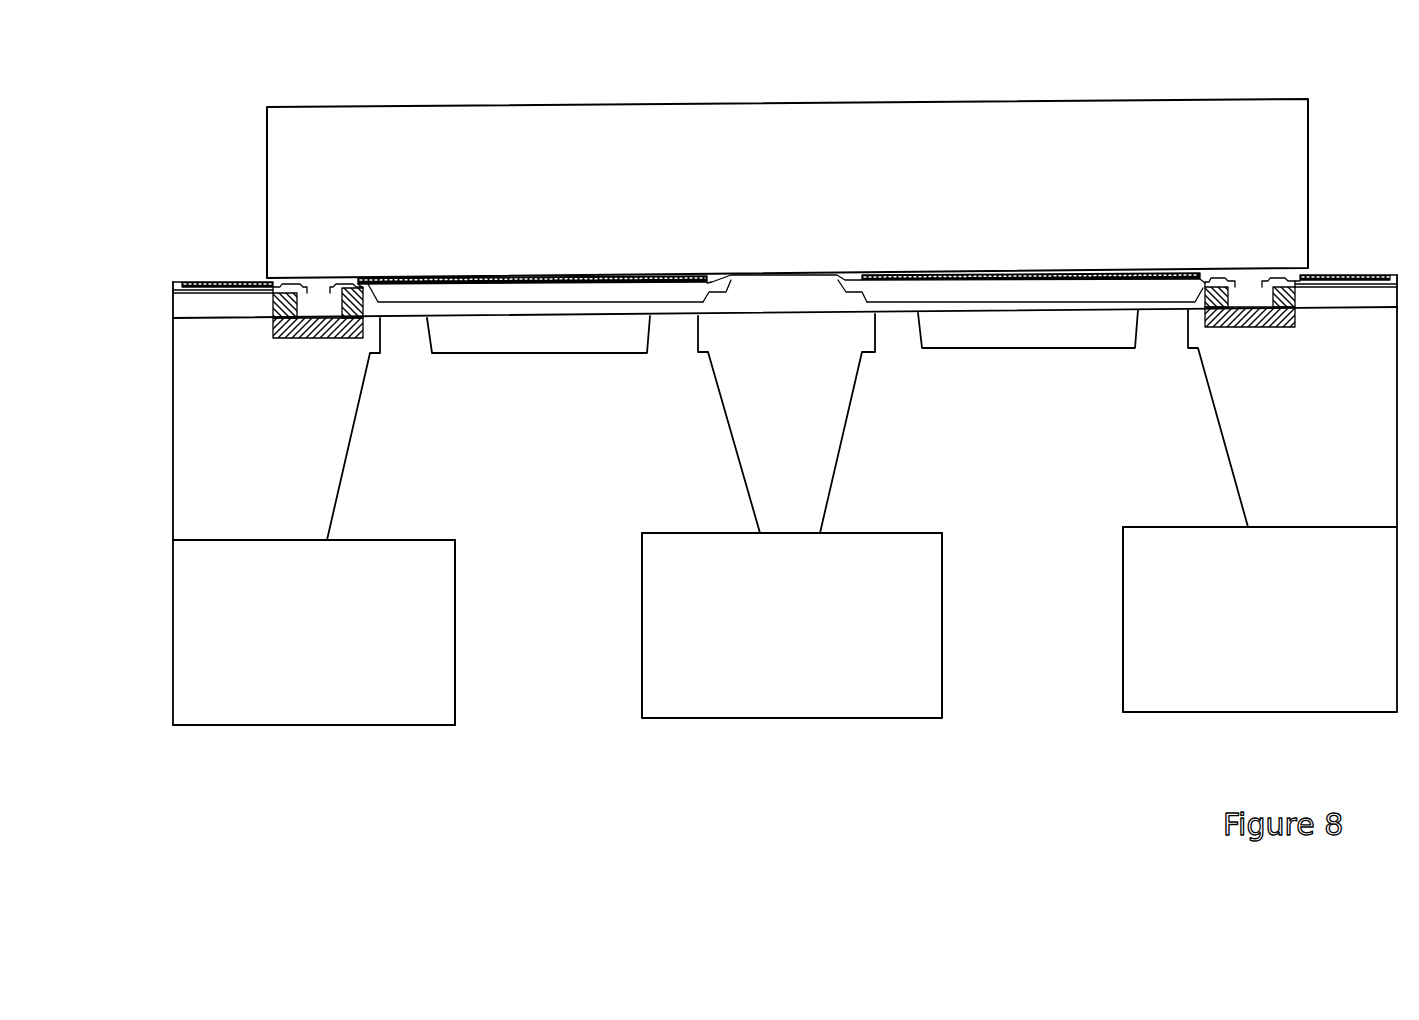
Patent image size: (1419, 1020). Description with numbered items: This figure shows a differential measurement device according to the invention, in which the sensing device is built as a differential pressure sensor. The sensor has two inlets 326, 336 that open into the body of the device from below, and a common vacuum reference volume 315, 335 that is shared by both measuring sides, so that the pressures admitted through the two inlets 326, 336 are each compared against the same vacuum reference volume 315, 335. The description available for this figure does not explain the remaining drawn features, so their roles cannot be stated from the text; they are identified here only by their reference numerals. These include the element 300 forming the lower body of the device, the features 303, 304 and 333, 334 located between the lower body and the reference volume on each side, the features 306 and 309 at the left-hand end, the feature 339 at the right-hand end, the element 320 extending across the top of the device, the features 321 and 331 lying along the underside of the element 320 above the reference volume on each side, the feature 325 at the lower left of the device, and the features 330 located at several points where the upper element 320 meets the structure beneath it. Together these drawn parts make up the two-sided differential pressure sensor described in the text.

The substrate 300 is at (237, 467).
The support pillar 303 is at (412, 312).
The recess 304 is at (530, 338).
The metal seal ring 306 is at (282, 333).
The insulating layer 309 is at (205, 290).
The vacuum reference volume 315 is at (590, 296).
The cap wafer 320 is at (287, 140).
The bonding layer 321 is at (503, 277).
The substrate block 325 is at (240, 648).
The inlet 326 is at (547, 700).
The seal bump 330 is at (320, 283).
The second membrane 331 is at (1032, 272).
The support pillar 333 is at (893, 311).
The recess 334 is at (1008, 347).
The vacuum reference volume 335 is at (950, 292).
The inlet 336 is at (1247, 328).
The insulating layer 339 is at (1337, 273).